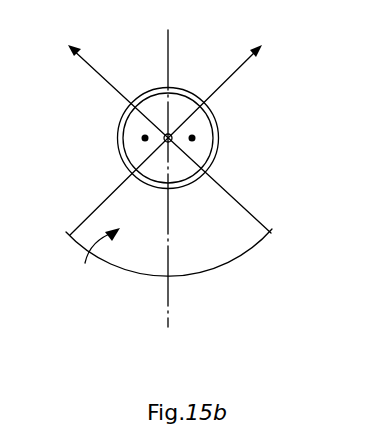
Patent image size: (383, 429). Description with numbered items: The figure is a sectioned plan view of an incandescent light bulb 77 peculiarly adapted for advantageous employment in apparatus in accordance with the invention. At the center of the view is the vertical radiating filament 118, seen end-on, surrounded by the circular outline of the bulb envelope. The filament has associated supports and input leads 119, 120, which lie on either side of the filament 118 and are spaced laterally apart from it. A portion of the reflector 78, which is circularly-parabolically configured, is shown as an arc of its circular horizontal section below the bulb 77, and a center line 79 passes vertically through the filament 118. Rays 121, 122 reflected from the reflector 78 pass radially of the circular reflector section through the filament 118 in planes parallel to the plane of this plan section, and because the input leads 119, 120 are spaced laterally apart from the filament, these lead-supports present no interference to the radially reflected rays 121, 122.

The incandescent light bulb 77 is at (98, 257).
The reflector 78 is at (232, 262).
The vertical center line 79 is at (171, 192).
The vertical radiating filament 118 is at (172, 136).
The input lead 119 is at (145, 138).
The input lead 120 is at (192, 138).
The ray 121 is at (95, 71).
The ray 122 is at (243, 69).